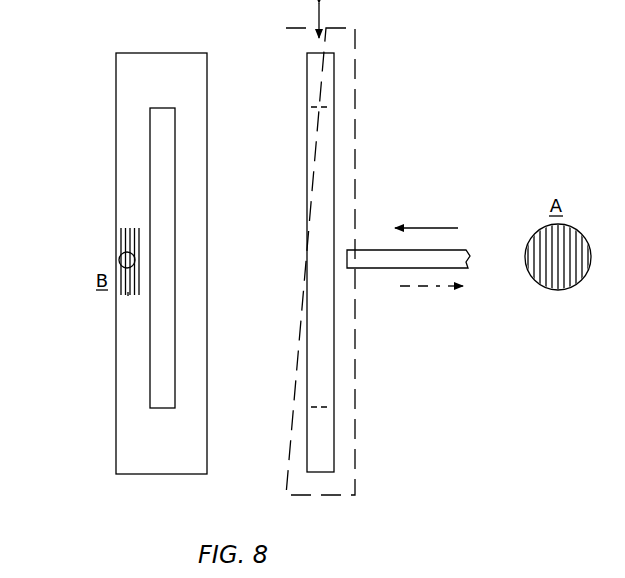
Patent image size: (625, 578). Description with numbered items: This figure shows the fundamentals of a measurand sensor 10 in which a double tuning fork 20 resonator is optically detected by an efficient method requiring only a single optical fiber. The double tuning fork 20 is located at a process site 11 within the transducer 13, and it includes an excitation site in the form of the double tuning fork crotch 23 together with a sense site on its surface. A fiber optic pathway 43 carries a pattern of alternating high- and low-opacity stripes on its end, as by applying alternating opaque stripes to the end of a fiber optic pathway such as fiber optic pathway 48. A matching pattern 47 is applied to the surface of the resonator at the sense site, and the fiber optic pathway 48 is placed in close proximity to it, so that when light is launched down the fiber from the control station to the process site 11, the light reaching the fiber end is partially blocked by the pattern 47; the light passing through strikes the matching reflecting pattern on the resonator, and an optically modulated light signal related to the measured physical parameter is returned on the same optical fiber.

The measurand sensor 10 is at (412, 146).
The process site 11 is at (421, 349).
The transducer 13 is at (355, 495).
The double tuning fork 20 is at (208, 448).
The double tuning fork crotch 23 is at (112, 251).
The fiber optic pathway 43 is at (118, 262).
The matching pattern 47 is at (129, 299).
The fiber optic pathway 48 is at (550, 290).